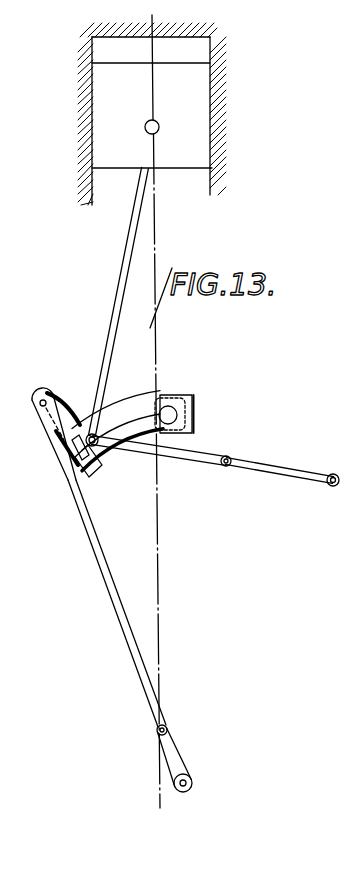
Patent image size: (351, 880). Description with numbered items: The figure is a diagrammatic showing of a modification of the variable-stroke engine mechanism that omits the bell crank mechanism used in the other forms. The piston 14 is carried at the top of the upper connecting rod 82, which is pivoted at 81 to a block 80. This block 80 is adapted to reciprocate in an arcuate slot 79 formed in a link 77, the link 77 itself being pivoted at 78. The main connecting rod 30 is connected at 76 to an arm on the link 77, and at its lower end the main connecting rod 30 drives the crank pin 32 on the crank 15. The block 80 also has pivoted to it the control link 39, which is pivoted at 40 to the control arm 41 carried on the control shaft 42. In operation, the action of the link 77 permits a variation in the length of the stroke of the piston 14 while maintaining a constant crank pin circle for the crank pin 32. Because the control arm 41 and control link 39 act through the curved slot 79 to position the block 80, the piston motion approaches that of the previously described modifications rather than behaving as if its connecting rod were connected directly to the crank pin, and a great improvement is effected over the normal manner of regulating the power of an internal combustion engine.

The piston 14 is at (182, 164).
The upper connecting rod 82 is at (129, 257).
The connection of main connecting rod to link arm 76 is at (45, 399).
The main connecting rod 30 is at (85, 530).
The block 80 is at (96, 453).
The pivot of upper connecting rod 81 is at (67, 448).
The link 77 is at (143, 402).
The arcuate slot 79 is at (133, 420).
The pivot of link 78 is at (176, 413).
The control link 39 is at (199, 463).
The pivot of control link 40 is at (226, 467).
The control arm 41 is at (285, 468).
The control shaft 42 is at (327, 488).
The crank pin 32 is at (158, 732).
The crank pin 15 is at (178, 787).